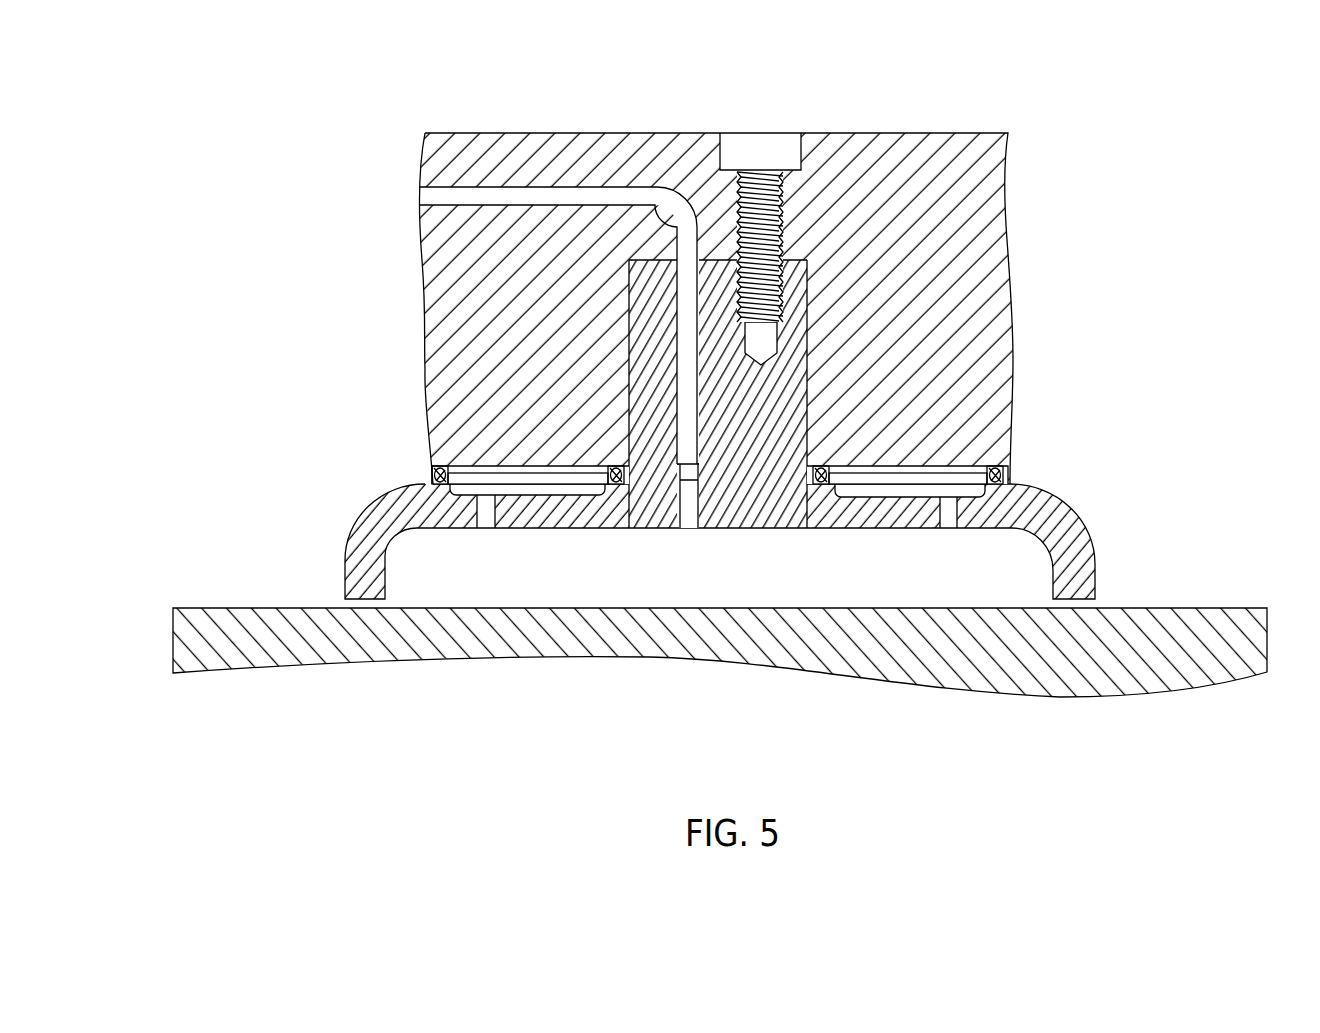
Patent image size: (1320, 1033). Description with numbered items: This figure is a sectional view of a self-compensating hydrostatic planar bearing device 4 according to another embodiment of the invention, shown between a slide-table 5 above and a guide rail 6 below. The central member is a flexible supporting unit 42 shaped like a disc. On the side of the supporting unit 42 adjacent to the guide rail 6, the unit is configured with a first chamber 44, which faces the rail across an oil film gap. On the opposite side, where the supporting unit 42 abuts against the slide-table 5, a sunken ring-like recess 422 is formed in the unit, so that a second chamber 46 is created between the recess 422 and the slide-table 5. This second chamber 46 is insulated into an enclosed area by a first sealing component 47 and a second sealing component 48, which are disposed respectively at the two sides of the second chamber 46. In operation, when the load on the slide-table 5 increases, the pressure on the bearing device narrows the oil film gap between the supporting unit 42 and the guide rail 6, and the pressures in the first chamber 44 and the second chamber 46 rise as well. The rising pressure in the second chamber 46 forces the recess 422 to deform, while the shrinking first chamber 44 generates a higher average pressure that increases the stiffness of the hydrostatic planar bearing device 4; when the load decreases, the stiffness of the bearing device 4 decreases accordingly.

The hydrostatic planar bearing device 4 is at (742, 506).
The slide-table 5 is at (934, 148).
The guide rail 6 is at (1163, 618).
The flexible supporting unit 42 is at (1073, 527).
The sunken ring-like recess 422 is at (515, 497).
The first chamber 44 is at (480, 590).
The second chamber 46 is at (562, 478).
The first sealing component 47 is at (433, 476).
The second sealing component 48 is at (606, 483).